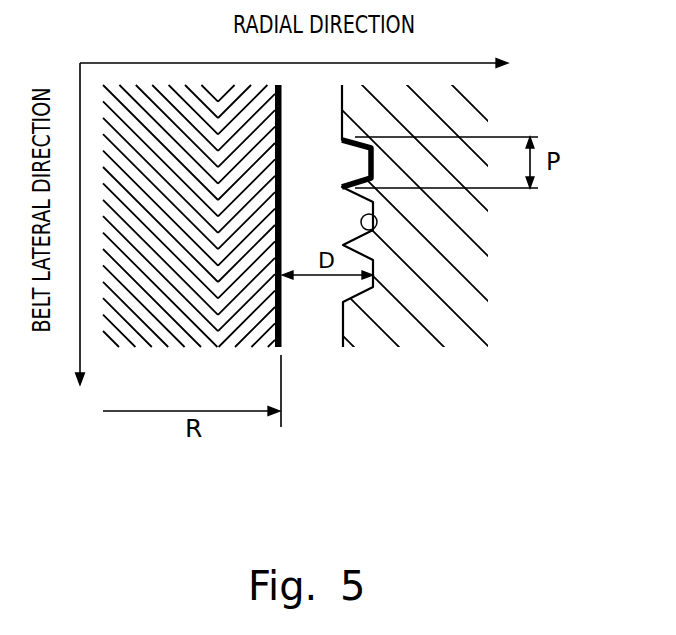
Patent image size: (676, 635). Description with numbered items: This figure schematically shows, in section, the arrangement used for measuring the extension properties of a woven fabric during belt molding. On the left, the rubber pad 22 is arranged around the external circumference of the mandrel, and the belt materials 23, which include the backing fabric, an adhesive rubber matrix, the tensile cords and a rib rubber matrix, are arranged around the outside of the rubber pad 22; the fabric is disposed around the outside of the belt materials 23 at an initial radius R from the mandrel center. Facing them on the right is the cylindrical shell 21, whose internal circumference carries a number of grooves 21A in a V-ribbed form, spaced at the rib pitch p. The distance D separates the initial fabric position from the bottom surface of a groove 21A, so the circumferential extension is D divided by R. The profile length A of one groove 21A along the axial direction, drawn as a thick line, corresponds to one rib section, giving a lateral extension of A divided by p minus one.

The cylindrical shell 21 is at (460, 307).
The grooves 21A is at (373, 231).
The rubber pad 22 is at (151, 330).
The belt materials 23 is at (250, 330).
The profile length of a groove A is at (377, 163).